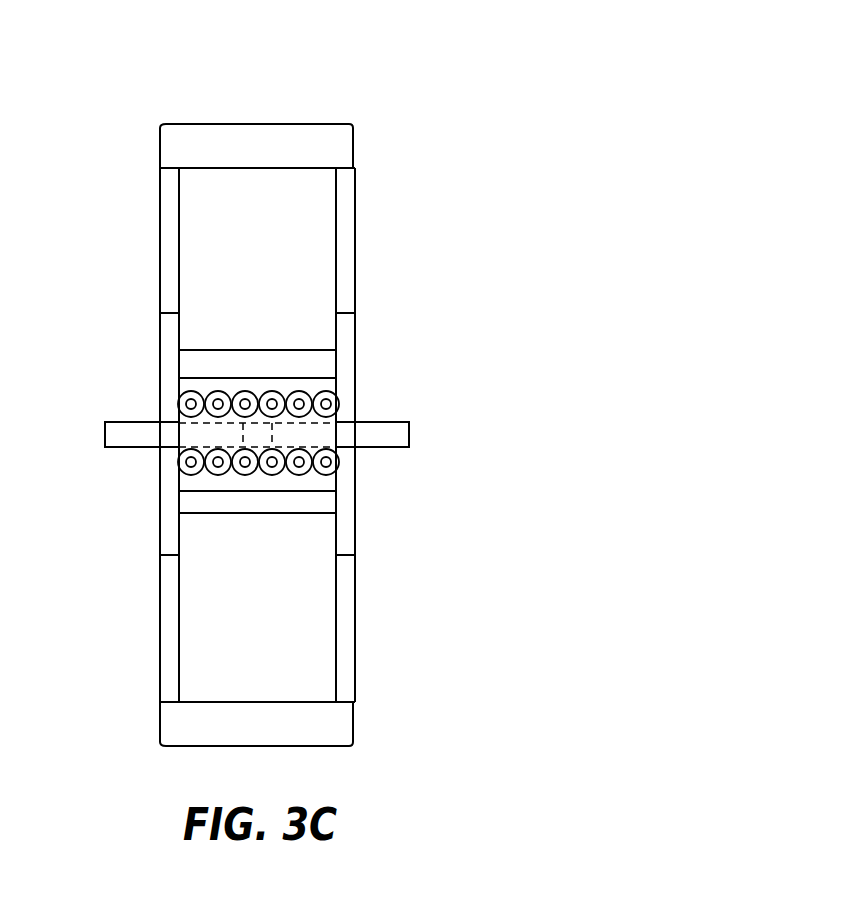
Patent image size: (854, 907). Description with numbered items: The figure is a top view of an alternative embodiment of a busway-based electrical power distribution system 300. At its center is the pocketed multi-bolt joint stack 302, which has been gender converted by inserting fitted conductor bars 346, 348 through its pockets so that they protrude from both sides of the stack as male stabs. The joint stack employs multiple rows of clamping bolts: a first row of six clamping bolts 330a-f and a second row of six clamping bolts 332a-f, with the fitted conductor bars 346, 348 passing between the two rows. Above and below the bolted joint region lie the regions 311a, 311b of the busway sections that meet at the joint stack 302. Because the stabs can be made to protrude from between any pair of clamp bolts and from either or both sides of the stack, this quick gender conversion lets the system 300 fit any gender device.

The busway-based electrical power distribution system 300 is at (352, 73).
The pocketed multi-bolt joint stack 302 is at (372, 353).
The upper cell region 311a is at (207, 230).
The lower cell region 311b is at (290, 652).
The clamping bolts 330a-f is at (170, 404).
The clamping bolts 332a-f is at (170, 463).
The fitted conductor bar 346 is at (409, 434).
The fitted conductor bar 348 is at (105, 429).